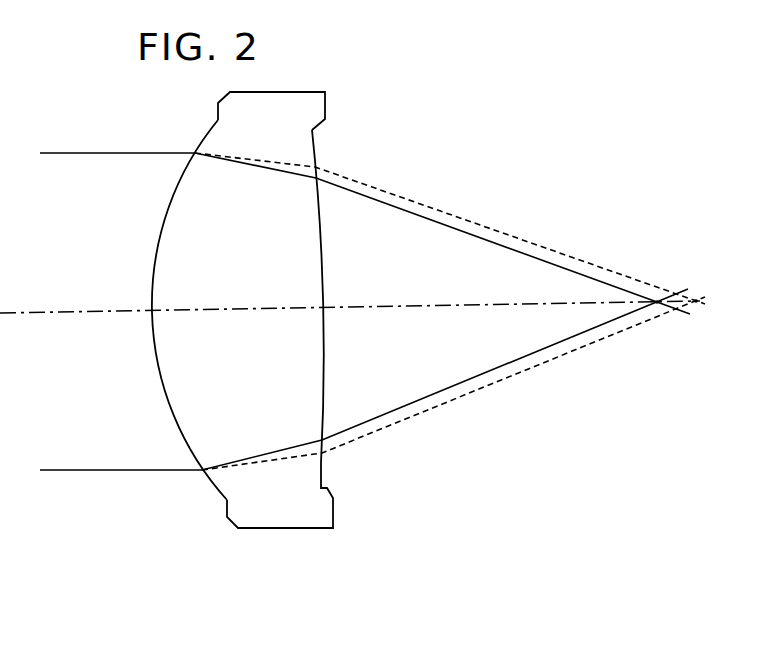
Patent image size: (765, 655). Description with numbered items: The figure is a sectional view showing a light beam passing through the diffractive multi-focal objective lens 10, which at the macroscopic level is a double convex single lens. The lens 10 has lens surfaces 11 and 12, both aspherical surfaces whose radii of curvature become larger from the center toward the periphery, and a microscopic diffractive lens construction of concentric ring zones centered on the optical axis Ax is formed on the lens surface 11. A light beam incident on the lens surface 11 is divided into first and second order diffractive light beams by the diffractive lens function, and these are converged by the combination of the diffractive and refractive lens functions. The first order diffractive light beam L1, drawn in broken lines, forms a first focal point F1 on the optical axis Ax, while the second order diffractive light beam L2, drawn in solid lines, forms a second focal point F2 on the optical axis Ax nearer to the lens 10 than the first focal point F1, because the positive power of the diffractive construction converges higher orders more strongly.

The lens 10 is at (260, 361).
The lens surface 11 is at (208, 485).
The lens surface 12 is at (322, 463).
The optical axis Ax is at (53, 315).
The first order diffractive light beam L1 is at (602, 338).
The second order diffractive light beam L2 is at (563, 345).
The first focal point F1 is at (688, 303).
The second focal point F2 is at (658, 304).